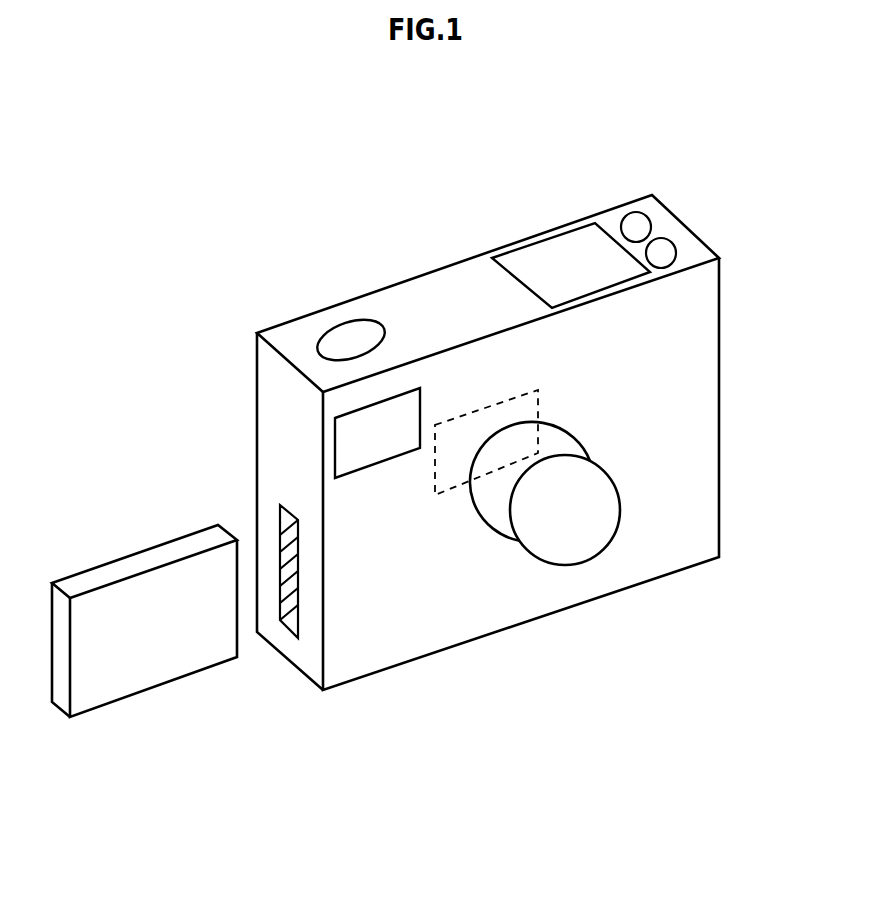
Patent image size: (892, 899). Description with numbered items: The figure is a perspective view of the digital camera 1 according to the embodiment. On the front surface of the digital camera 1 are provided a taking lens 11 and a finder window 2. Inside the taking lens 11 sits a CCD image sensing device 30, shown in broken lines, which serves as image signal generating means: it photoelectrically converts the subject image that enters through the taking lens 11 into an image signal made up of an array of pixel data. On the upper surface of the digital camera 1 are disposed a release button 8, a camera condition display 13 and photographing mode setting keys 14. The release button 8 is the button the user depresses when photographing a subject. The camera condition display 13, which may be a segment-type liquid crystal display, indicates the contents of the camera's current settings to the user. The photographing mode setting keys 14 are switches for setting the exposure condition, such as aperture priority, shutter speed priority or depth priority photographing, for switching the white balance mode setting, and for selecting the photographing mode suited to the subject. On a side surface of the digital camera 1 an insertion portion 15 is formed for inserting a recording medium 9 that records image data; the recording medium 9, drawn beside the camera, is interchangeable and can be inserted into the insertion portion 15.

The digital camera 1 is at (188, 167).
The finder window 2 is at (337, 457).
The release button 8 is at (348, 337).
The recording medium 9 is at (153, 688).
The taking lens 11 is at (620, 495).
The camera condition display 13 is at (551, 258).
The photographing mode setting keys 14 is at (640, 223).
The insertion portion 15 is at (292, 632).
The CCD image sensing device 30 is at (450, 495).